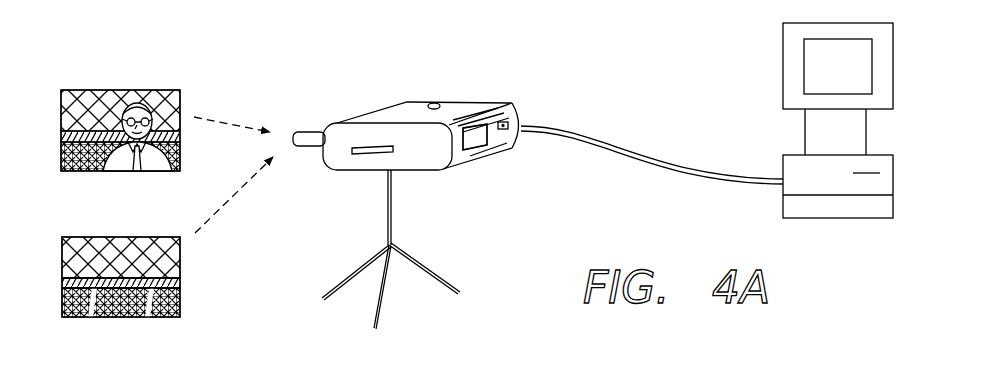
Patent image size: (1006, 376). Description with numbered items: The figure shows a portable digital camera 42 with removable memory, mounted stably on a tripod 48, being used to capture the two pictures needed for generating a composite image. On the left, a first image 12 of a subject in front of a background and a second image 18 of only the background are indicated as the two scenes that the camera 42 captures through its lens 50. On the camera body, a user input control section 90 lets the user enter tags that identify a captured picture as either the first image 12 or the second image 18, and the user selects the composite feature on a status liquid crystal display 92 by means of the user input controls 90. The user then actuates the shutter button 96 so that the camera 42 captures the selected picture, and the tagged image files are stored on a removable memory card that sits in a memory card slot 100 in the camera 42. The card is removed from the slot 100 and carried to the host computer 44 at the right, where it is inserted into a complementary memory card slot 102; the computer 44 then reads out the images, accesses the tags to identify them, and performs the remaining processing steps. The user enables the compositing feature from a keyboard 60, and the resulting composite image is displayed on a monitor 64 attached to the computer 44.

The first image 12 is at (120, 90).
The second image 18 is at (180, 283).
The portable digital camera 42 is at (443, 120).
The host computer 44 is at (827, 119).
The tripod 48 is at (398, 250).
The lens 50 is at (303, 127).
The keyboard 60 is at (800, 212).
The monitor 64 is at (783, 90).
The user input control section 90 is at (505, 122).
The status liquid crystal display 92 is at (475, 147).
The shutter button 96 is at (437, 104).
The memory card slot 100 is at (379, 152).
The memory card slot 102 is at (880, 173).